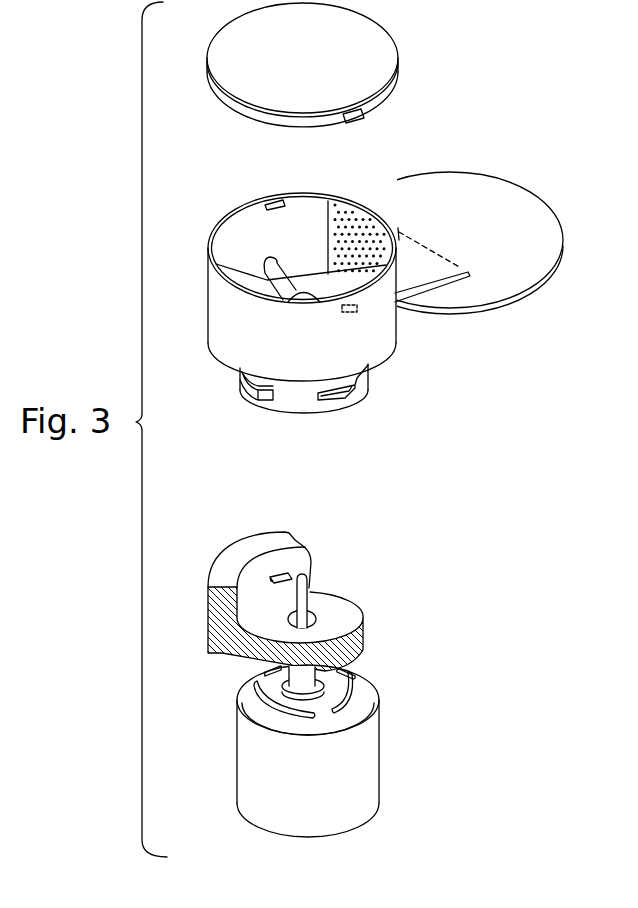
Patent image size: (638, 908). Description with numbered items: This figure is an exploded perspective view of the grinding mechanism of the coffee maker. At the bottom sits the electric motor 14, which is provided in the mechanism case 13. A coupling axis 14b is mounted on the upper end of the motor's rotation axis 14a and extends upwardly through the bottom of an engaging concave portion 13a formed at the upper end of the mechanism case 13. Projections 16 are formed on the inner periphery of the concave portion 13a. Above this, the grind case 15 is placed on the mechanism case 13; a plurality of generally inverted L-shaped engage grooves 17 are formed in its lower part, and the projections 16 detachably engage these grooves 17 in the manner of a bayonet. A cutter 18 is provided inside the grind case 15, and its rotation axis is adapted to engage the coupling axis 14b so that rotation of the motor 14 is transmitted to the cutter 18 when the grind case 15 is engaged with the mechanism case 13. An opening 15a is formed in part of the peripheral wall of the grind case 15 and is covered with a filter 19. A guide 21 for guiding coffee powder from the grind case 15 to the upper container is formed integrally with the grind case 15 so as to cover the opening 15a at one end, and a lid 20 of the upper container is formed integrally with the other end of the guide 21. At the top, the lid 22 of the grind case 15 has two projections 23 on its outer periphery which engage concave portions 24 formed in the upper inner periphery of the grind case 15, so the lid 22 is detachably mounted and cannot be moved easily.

The mechanism case 13 is at (207, 632).
The engaging concave portion 13a is at (252, 582).
The electric motor 14 is at (374, 757).
The rotation axis 14a is at (310, 683).
The coupling axis 14b is at (312, 590).
The grind case 15 is at (212, 330).
The opening 15a is at (334, 236).
The projections 16 is at (292, 578).
The inverted L-shaped engage grooves 17 is at (363, 423).
The cutter 18 is at (265, 270).
The filter 19 is at (342, 216).
The lid of the upper container 20 is at (548, 262).
The guide 21 is at (423, 238).
The lid of the grind case 22 is at (381, 40).
The projections 23 is at (364, 118).
The concave portions 24 is at (280, 200).